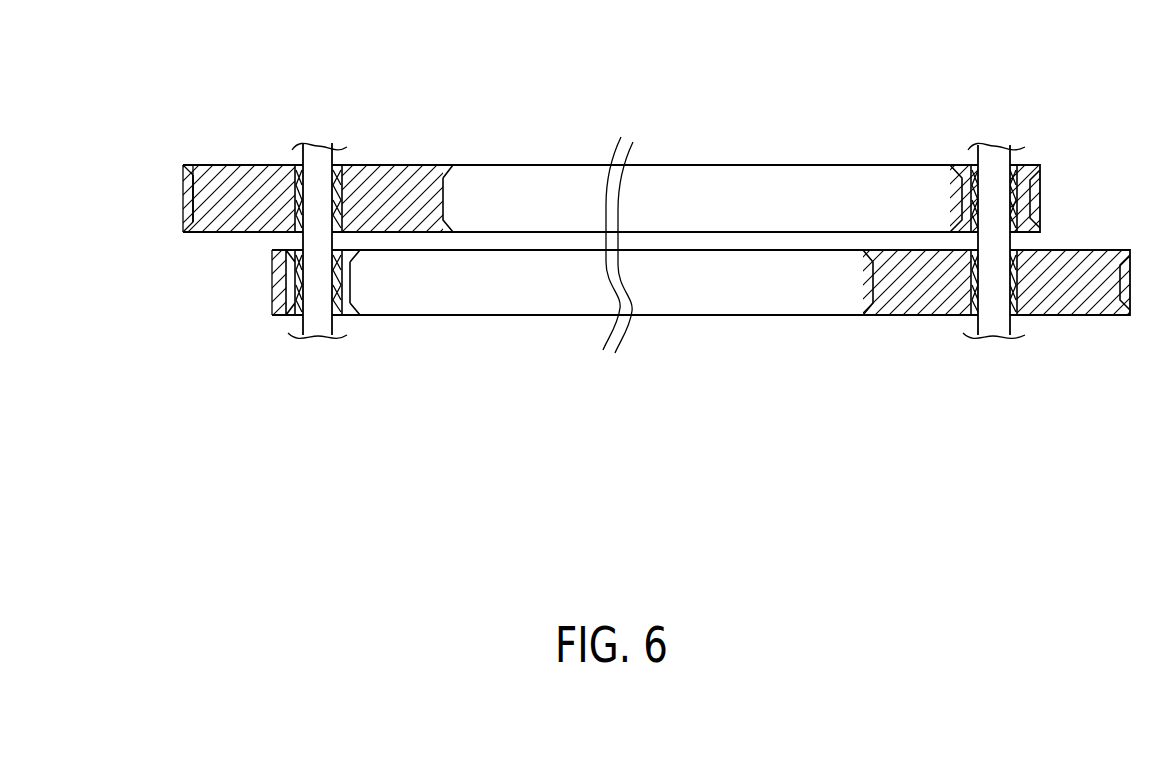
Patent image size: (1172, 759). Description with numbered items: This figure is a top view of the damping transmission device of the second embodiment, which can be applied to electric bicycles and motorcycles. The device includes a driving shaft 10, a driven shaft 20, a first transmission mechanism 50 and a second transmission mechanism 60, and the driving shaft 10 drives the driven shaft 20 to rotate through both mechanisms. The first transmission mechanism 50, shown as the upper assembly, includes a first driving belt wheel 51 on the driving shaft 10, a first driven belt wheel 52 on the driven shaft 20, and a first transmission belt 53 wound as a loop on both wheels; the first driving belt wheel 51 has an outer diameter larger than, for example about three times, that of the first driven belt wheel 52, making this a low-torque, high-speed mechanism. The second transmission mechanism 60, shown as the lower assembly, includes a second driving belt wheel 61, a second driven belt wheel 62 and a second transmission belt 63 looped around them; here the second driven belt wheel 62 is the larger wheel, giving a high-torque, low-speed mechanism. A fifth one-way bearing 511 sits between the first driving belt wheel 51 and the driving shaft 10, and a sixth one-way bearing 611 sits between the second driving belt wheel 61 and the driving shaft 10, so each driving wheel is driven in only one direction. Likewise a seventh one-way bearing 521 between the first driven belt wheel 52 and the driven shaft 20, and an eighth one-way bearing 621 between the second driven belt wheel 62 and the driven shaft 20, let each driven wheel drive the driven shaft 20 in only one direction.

The driving shaft 10 is at (332, 197).
The driven shaft 20 is at (990, 208).
The first transmission mechanism 50 is at (568, 150).
The first driving belt wheel 51 is at (243, 182).
The fifth one-way bearing 511 is at (292, 180).
The first driven belt wheel 52 is at (1040, 215).
The seventh one-way bearing 521 is at (1043, 172).
The first transmission belt 53 is at (787, 185).
The second transmission mechanism 60 is at (718, 320).
The second driving belt wheel 61 is at (348, 312).
The sixth one-way bearing 611 is at (292, 305).
The second driven belt wheel 62 is at (1082, 300).
The eighth one-way bearing 621 is at (955, 305).
The second transmission belt 63 is at (527, 295).